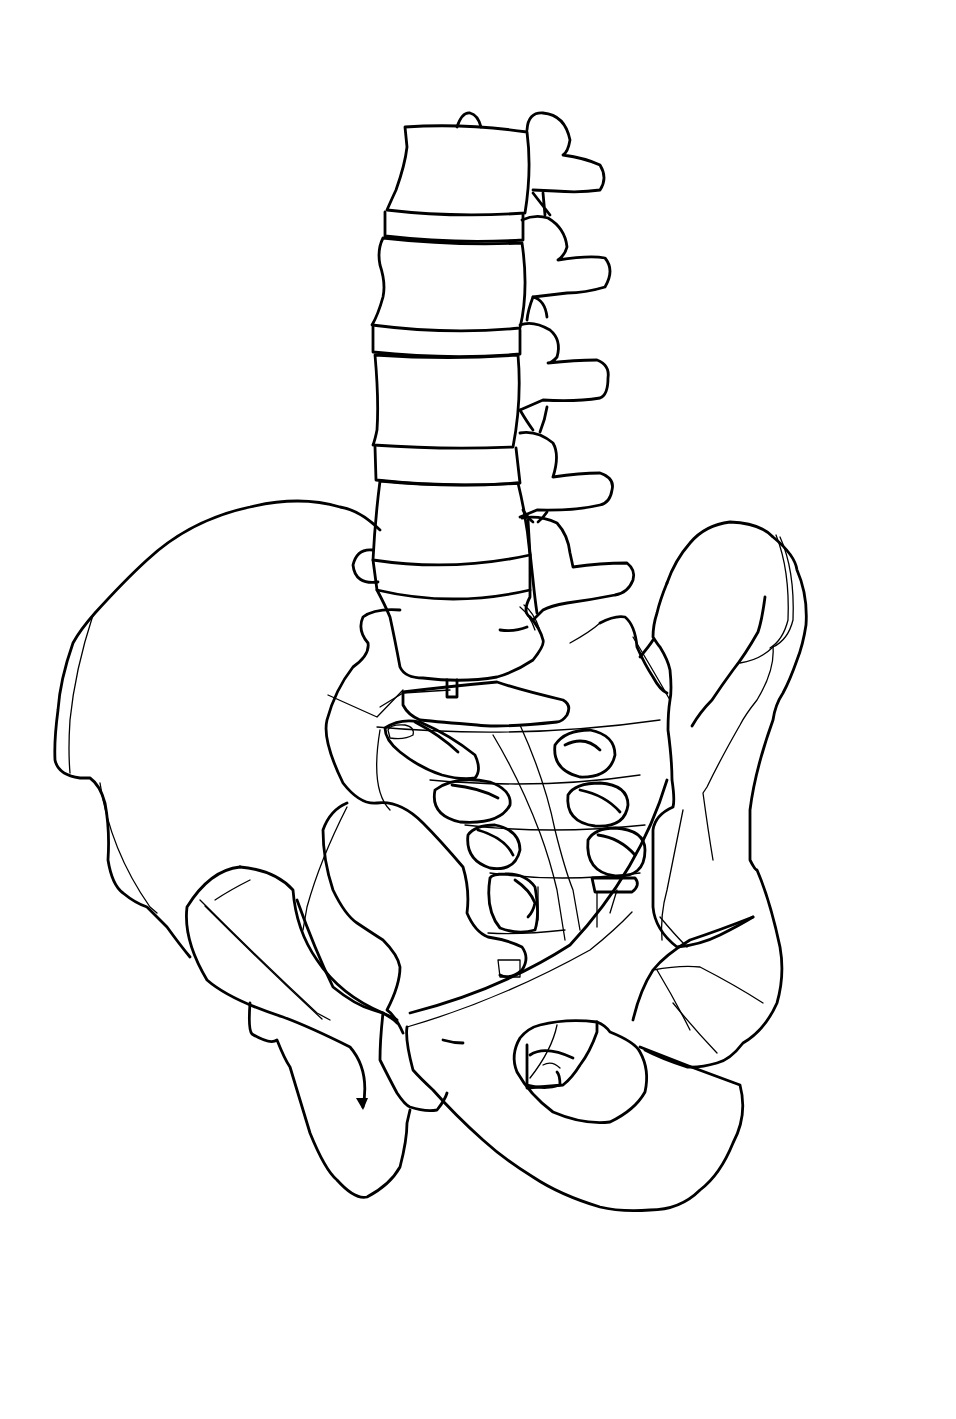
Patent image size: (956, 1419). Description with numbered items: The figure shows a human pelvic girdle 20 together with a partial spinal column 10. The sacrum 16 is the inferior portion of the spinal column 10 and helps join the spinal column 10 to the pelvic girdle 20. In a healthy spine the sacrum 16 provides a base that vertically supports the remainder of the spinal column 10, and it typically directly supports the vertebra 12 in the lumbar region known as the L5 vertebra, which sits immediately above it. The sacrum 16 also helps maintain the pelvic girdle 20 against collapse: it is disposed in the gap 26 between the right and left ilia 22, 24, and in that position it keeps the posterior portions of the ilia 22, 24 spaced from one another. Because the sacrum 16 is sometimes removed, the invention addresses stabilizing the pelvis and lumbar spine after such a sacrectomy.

The spinal column 10 is at (493, 351).
The vertebra 12 is at (542, 622).
The sacrum 16 is at (353, 753).
The pelvic girdle 20 is at (444, 887).
The ilium 22 is at (170, 575).
The ilium 24 is at (747, 550).
The gap 26 is at (626, 600).